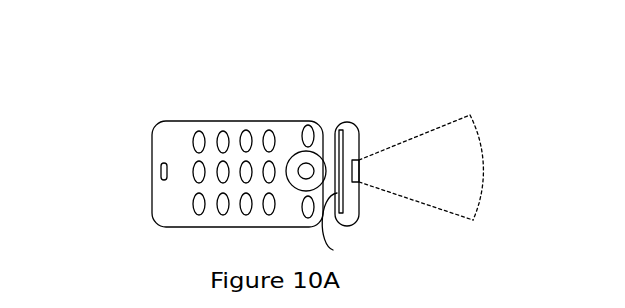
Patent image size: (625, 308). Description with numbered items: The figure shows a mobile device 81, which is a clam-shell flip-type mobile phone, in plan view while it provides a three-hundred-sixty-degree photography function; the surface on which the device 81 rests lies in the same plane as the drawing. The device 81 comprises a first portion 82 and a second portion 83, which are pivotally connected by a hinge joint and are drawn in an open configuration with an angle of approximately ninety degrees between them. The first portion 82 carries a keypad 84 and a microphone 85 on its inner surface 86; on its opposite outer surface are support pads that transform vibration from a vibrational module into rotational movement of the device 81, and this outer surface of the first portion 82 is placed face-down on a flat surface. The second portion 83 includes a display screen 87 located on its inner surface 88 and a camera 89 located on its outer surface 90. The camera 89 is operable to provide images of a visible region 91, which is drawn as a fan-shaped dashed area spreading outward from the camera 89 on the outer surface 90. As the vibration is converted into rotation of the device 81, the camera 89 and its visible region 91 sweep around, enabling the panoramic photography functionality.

The mobile device 81 is at (183, 90).
The first portion 82 is at (172, 141).
The second portion 83 is at (345, 122).
The keypad 84 is at (199, 205).
The microphone 85 is at (163, 165).
The inner surface 86 is at (243, 126).
The display screen 87 is at (333, 250).
The inner surface 88 is at (338, 131).
The camera 89 is at (359, 172).
The outer surface 90 is at (361, 205).
The visible region 91 is at (480, 152).